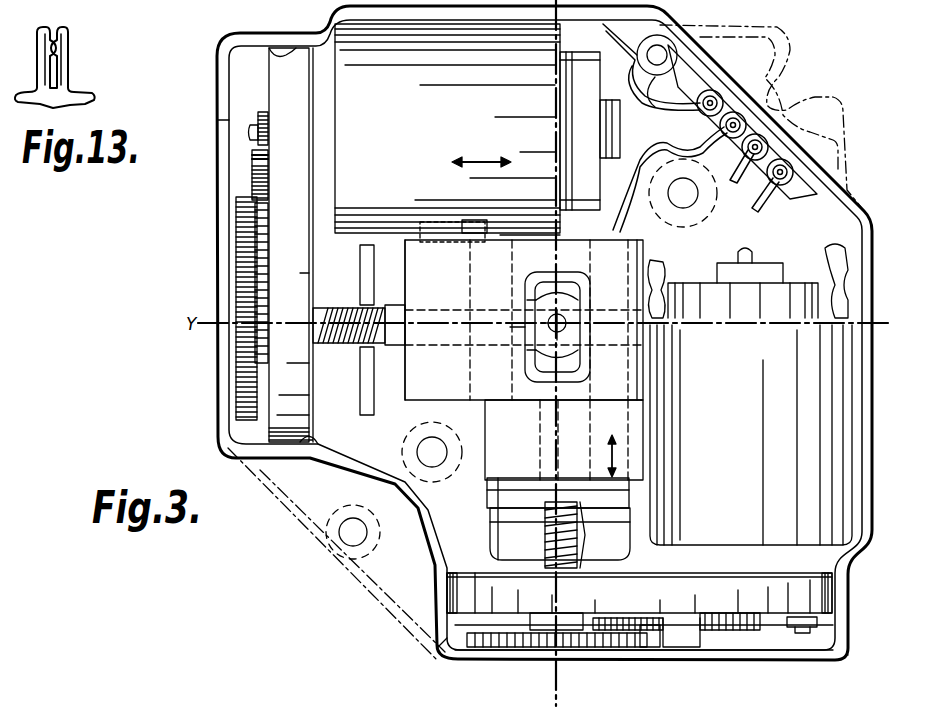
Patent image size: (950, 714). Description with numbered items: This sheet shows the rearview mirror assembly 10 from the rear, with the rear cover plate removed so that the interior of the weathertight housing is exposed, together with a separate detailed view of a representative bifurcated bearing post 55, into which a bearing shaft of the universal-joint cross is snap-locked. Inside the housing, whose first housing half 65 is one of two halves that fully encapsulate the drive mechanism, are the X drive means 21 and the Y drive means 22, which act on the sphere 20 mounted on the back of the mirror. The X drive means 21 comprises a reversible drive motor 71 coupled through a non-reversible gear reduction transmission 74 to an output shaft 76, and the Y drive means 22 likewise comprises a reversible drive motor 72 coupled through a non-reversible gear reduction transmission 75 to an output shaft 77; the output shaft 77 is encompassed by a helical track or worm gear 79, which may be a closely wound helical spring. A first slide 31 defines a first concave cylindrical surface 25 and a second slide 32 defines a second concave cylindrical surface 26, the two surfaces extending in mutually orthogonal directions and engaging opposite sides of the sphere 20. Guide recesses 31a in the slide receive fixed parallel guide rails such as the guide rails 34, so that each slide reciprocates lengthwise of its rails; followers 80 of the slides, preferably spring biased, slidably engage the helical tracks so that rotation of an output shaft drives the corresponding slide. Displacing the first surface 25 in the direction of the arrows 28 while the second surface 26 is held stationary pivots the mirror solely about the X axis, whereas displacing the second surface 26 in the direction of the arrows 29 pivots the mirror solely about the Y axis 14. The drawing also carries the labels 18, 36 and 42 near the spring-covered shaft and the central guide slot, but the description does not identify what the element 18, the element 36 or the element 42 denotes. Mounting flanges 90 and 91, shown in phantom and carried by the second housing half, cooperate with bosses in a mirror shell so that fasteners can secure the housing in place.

In FIG. 3, the rearview mirror assembly 10 is at (230, 44).
In FIG. 13, the bifurcated bearing post 55 is at (70, 73).
In FIG. 3, the X drive means 21 is at (214, 110).
In FIG. 3, the Y drive means 22 is at (752, 667).
In FIG. 3, the reversible drive motor 71 is at (392, 100).
In FIG. 3, the arrows 28 is at (481, 158).
In FIG. 3, the second concave cylindrical surface 26 is at (440, 232).
In FIG. 3, the first concave cylindrical surface 25 is at (513, 230).
In FIG. 3, the non-reversible gear reduction transmission 74 is at (285, 262).
In FIG. 3, the Y axis 14 is at (287, 323).
In FIG. 3, the shaft 18 is at (362, 297).
In FIG. 3, the output shaft 76 is at (343, 345).
In FIG. 3, the first slide member 31 is at (440, 288).
In FIG. 3, the guide recess 31a is at (408, 240).
In FIG. 3, the sphere 20 is at (568, 310).
In FIG. 3, the stop 36 is at (590, 342).
In FIG. 3, the pin 42 is at (523, 367).
In FIG. 3, the second slide member 32 is at (523, 456).
In FIG. 3, the arrows 29 is at (607, 438).
In FIG. 3, the followers 80 is at (603, 490).
In FIG. 3, the guide rails 34 is at (642, 518).
In FIG. 3, the output shaft 77 is at (545, 548).
In FIG. 3, the worm gear 79 is at (600, 535).
In FIG. 3, the reversible drive motor 72 is at (768, 441).
In FIG. 3, the non-reversible gear reduction transmission 75 is at (585, 640).
In FIG. 3, the mounting flange 90 is at (778, 40).
In FIG. 3, the mounting flange 91 is at (280, 500).
In FIG. 3, the first housing half 65 is at (437, 657).